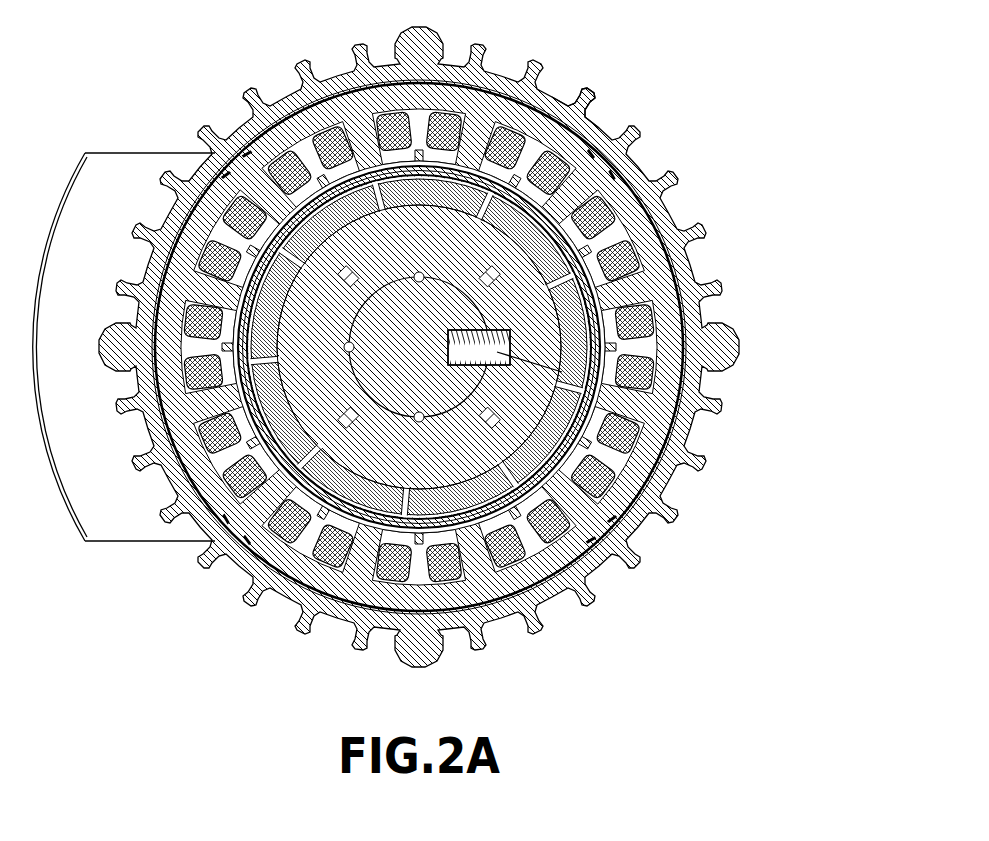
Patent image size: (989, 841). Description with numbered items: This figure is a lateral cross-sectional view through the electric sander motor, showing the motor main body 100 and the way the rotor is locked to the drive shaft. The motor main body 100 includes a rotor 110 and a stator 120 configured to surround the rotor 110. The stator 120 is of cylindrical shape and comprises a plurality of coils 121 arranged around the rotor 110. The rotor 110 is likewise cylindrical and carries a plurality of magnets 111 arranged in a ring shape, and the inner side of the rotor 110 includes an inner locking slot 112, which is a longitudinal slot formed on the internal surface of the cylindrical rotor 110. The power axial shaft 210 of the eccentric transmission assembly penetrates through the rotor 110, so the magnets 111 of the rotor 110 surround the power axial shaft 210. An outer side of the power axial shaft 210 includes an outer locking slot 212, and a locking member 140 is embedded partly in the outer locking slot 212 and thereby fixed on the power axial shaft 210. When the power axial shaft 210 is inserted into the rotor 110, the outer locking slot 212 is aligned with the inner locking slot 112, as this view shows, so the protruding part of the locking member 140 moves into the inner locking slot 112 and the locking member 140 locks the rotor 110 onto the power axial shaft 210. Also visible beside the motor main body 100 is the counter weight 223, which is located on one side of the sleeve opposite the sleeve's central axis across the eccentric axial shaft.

The motor main body 100 is at (475, 341).
The rotor 110 is at (548, 173).
The magnets 111 is at (590, 207).
The inner locking slot 112 is at (577, 452).
The stator 120 is at (484, 107).
The coils 121 is at (590, 118).
The locking member 140 is at (495, 339).
The power axial shaft 210 is at (347, 137).
The outer locking slot 212 is at (625, 410).
The counter weight 223 is at (127, 178).